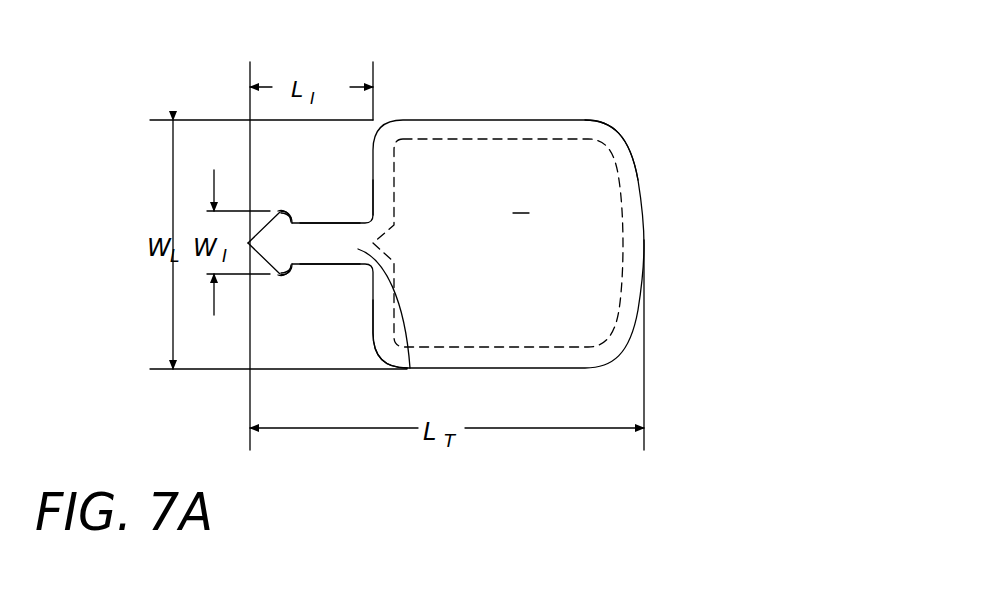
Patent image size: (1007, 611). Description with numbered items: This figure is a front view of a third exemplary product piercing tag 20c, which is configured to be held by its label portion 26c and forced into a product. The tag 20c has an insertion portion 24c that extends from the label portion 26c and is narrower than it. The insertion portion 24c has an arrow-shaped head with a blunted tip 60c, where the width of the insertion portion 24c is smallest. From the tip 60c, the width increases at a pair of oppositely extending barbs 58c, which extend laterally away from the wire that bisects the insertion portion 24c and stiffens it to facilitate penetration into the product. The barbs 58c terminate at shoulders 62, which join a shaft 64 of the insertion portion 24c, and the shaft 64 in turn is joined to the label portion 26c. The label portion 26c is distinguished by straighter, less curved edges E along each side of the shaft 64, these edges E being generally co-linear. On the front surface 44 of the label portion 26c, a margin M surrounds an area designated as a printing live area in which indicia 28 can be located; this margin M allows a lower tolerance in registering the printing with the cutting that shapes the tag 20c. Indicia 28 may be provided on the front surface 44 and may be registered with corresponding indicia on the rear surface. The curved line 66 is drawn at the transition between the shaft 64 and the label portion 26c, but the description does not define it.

The tag 20c is at (598, 99).
The insertion portion 24c is at (325, 243).
The label portion 26c is at (523, 158).
The indicia 28 is at (582, 235).
The front surface 44 is at (457, 173).
The barbs 58c is at (278, 212).
The tip 60c is at (247, 240).
The shoulders 62 is at (292, 216).
The shaft 64 is at (340, 225).
The curved edge 66 is at (410, 370).
The edges E is at (372, 177).
The margin M is at (609, 138).